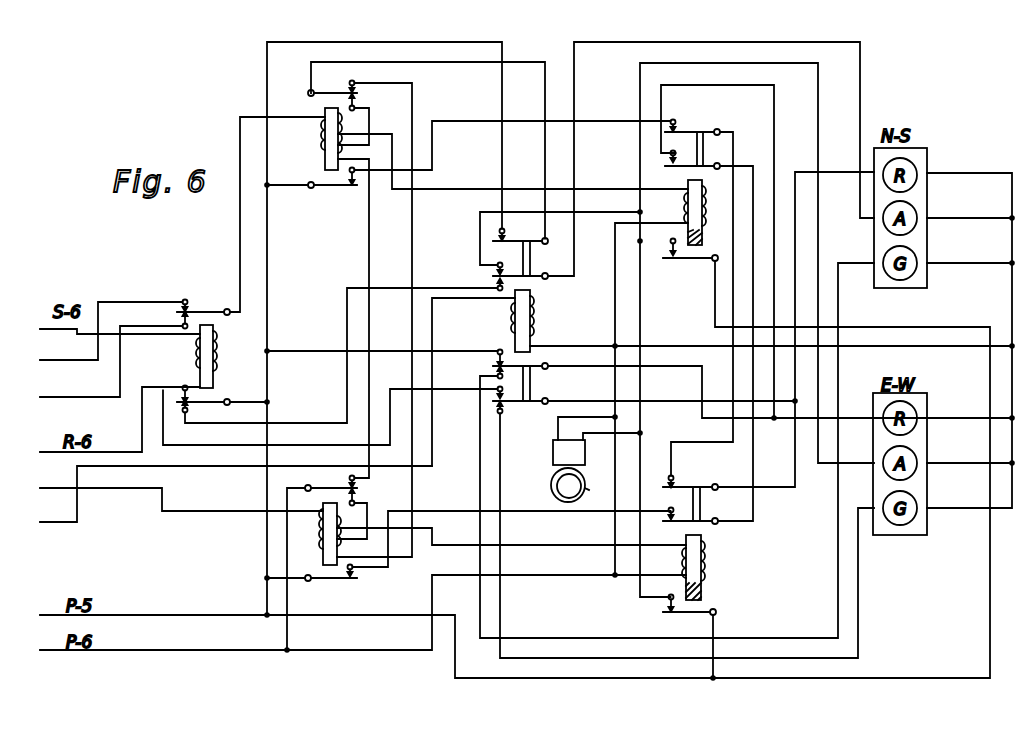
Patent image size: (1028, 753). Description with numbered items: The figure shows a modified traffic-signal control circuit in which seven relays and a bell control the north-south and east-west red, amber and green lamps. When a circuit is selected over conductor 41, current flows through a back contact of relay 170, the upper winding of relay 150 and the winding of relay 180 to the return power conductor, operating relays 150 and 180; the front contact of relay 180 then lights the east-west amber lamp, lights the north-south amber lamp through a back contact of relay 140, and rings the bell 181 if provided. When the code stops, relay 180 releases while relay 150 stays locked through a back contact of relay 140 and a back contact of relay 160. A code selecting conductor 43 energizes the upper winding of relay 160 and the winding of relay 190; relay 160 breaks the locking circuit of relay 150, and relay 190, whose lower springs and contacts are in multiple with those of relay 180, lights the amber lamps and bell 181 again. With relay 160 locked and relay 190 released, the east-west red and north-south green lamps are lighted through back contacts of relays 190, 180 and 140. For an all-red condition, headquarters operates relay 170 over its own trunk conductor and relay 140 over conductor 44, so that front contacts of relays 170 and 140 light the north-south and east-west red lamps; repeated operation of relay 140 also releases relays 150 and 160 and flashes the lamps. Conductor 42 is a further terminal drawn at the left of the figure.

The relay 140 is at (509, 321).
The relay 150 is at (319, 135).
The relay 160 is at (331, 544).
The relay 170 is at (192, 356).
The relay 180 is at (685, 191).
The bell 181 is at (553, 471).
The relay 190 is at (705, 546).
The conductor 41 is at (111, 331).
The terminal 42 is at (111, 361).
The conductor 43 is at (66, 486).
The conductor 44 is at (236, 508).